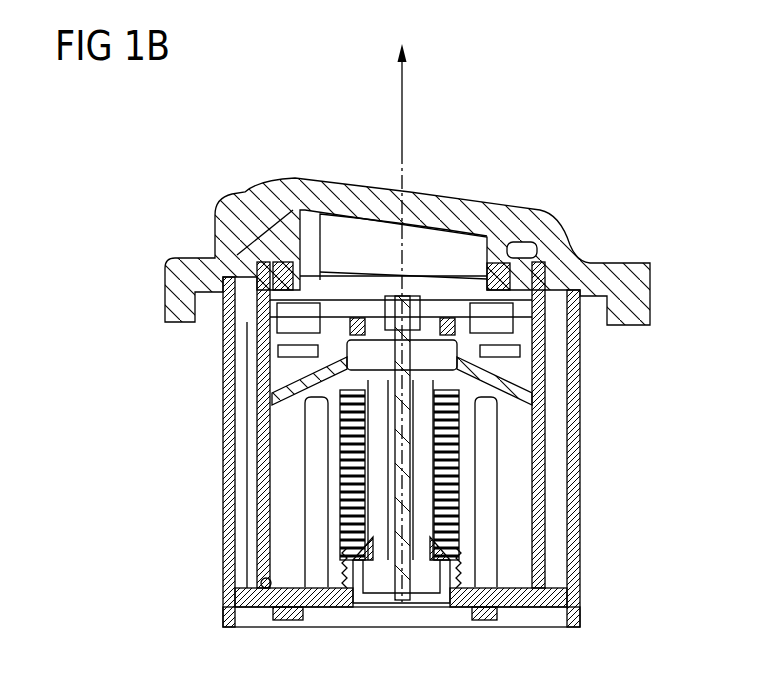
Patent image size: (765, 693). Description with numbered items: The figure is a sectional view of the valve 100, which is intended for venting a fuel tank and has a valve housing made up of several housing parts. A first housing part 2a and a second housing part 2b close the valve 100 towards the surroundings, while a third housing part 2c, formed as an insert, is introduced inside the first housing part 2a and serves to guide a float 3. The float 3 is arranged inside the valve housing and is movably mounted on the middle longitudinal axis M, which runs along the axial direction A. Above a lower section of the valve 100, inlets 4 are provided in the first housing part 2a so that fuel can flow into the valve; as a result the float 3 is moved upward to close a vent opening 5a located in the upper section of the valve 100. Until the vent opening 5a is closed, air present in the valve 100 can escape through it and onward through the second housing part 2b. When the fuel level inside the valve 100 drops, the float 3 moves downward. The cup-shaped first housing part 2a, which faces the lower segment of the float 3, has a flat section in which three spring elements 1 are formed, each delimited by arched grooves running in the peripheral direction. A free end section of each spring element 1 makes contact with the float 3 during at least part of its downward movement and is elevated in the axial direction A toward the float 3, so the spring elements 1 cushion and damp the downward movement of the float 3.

The valve 100 is at (570, 137).
The spring element 1 is at (270, 580).
The first housing part 2a is at (577, 468).
The second housing part 2b is at (503, 222).
The third housing part 2c is at (537, 528).
The float 3 is at (503, 397).
The inlets 4 is at (300, 583).
The vent opening 5a is at (393, 277).
The axial direction A is at (402, 78).
The middle longitudinal axis M is at (403, 180).